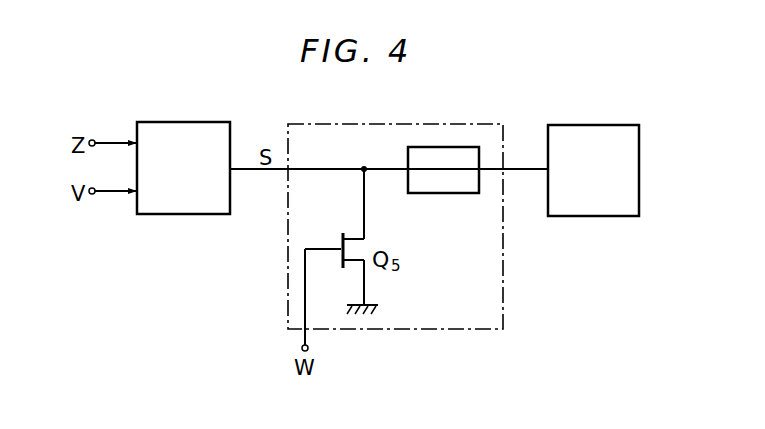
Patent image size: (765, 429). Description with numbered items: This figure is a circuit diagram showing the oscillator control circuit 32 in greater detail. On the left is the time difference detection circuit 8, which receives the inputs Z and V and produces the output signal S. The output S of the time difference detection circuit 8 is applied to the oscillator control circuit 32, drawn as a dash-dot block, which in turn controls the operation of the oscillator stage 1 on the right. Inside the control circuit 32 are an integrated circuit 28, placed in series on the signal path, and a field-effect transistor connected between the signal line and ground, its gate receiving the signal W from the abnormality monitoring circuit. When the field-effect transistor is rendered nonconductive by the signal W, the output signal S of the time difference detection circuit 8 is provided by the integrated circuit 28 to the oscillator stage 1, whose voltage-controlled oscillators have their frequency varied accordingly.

The time difference detection circuit 8 is at (190, 128).
The oscillator control circuit 32 is at (400, 130).
The integrated circuit 28 is at (462, 183).
The oscillator stage 1 is at (588, 132).